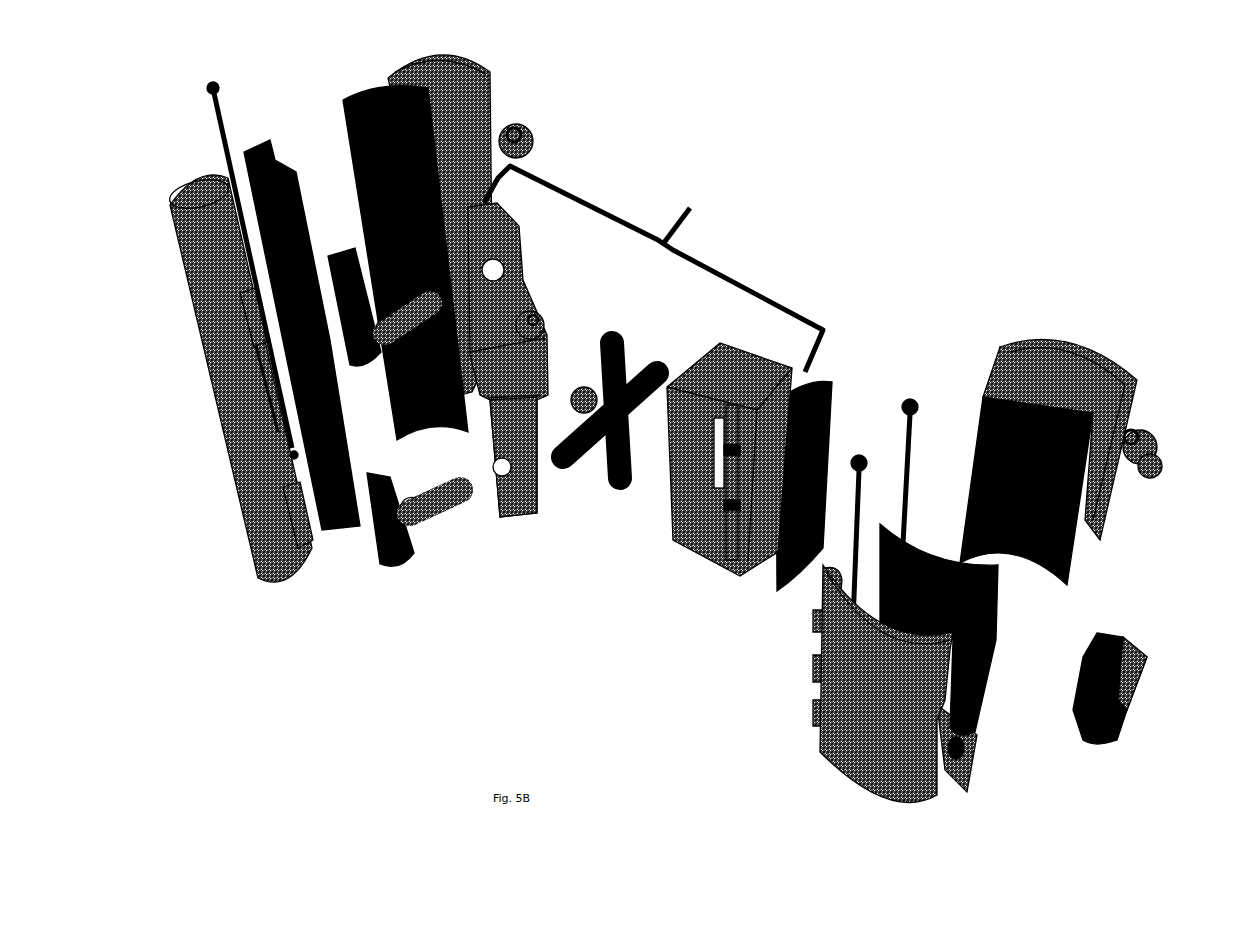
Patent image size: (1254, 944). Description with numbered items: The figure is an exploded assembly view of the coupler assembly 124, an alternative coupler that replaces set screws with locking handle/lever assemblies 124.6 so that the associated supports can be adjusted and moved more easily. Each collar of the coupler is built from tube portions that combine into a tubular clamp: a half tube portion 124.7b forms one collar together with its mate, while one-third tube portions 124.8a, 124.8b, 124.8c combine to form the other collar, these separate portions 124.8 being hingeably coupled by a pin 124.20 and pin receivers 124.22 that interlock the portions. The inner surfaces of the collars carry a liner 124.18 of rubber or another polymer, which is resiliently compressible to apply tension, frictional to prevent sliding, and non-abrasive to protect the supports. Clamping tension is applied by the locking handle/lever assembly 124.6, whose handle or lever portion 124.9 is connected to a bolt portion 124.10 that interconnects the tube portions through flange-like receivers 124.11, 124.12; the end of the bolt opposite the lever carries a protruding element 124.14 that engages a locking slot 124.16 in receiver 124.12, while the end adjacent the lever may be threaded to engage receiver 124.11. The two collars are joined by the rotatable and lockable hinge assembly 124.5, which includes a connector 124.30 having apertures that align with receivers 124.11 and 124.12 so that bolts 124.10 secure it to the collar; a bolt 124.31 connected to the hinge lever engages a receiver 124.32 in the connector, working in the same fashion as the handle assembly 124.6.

The coupler assembly 124 is at (803, 173).
The hinge assembly 124.5 is at (653, 269).
The locking handle/lever assembly 124.6 is at (628, 356).
The tube portion 124.7b is at (484, 82).
The separate portions 124.8 is at (730, 482).
The one-third tube portion 124.8a is at (178, 268).
The one-third tube portion 124.8b is at (1082, 342).
The one-third tube portion 124.8c is at (757, 358).
The handle or lever portion 124.9 is at (327, 252).
The bolt portion 124.10 is at (363, 250).
The flange-like receiver 124.11 is at (242, 322).
The flange-like receiver 124.12 is at (536, 150).
The protruding element 124.14 is at (455, 520).
The locking slot 124.16 is at (524, 133).
The liner 124.18 is at (261, 140).
The pin 124.20 is at (207, 100).
The pin receiver 124.22 is at (1007, 353).
The connector 124.30 is at (519, 250).
The bolt 124.31 is at (620, 487).
The receiver 124.32 is at (533, 413).